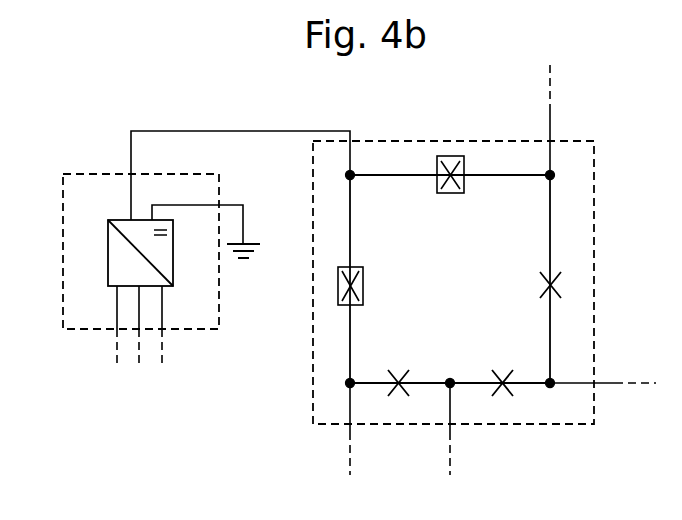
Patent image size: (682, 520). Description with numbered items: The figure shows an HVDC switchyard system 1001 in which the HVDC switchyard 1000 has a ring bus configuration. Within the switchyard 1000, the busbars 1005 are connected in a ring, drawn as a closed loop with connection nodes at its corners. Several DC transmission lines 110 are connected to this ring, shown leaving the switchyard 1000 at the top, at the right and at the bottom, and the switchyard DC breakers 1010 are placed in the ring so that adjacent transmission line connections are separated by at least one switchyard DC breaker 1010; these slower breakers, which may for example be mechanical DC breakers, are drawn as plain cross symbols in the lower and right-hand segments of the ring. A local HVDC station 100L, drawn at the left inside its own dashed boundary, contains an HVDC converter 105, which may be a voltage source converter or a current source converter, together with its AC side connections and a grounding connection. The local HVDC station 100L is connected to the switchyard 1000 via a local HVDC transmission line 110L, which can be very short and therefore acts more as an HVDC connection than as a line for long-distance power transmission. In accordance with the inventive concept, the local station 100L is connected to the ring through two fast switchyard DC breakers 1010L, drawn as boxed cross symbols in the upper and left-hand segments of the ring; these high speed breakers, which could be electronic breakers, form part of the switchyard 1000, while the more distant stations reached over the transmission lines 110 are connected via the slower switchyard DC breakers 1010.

The local HVDC transmission line 110L is at (251, 116).
The HVDC converter 105 is at (108, 270).
The local HVDC station 100L is at (222, 312).
The HVDC switchyard 1000 is at (454, 284).
The HVDC switchyard system 1001 is at (598, 471).
The DC transmission lines 110 is at (562, 128).
The busbars 1005 is at (548, 233).
The fast switchyard DC breakers 1010L is at (455, 194).
The switchyard DC breakers 1010 is at (540, 287).